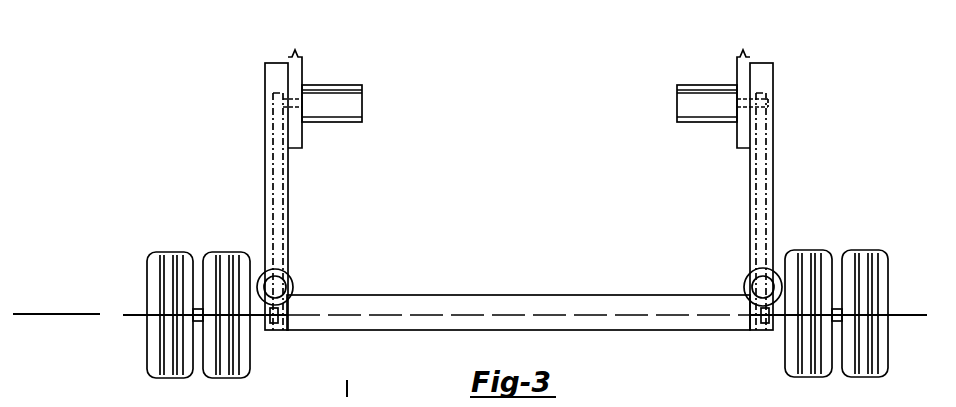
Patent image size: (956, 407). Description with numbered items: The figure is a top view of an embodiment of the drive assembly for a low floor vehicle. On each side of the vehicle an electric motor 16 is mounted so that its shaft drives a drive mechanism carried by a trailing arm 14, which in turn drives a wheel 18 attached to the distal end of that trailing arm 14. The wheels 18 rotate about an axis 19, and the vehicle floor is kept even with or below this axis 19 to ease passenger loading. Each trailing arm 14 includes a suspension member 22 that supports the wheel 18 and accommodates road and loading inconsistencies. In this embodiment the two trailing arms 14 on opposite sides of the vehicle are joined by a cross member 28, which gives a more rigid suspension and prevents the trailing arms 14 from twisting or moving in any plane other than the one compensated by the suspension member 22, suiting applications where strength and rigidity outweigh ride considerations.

The trailing arm 14 is at (273, 167).
The electric motor 16 is at (341, 92).
The wheel 18 is at (812, 250).
The axis 19 is at (915, 319).
The suspension member 22 is at (293, 284).
The cross member 28 is at (452, 297).